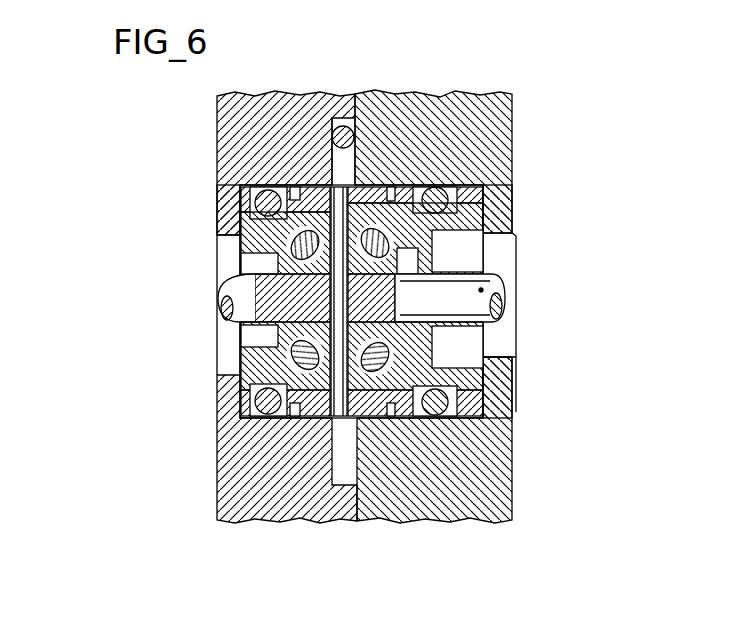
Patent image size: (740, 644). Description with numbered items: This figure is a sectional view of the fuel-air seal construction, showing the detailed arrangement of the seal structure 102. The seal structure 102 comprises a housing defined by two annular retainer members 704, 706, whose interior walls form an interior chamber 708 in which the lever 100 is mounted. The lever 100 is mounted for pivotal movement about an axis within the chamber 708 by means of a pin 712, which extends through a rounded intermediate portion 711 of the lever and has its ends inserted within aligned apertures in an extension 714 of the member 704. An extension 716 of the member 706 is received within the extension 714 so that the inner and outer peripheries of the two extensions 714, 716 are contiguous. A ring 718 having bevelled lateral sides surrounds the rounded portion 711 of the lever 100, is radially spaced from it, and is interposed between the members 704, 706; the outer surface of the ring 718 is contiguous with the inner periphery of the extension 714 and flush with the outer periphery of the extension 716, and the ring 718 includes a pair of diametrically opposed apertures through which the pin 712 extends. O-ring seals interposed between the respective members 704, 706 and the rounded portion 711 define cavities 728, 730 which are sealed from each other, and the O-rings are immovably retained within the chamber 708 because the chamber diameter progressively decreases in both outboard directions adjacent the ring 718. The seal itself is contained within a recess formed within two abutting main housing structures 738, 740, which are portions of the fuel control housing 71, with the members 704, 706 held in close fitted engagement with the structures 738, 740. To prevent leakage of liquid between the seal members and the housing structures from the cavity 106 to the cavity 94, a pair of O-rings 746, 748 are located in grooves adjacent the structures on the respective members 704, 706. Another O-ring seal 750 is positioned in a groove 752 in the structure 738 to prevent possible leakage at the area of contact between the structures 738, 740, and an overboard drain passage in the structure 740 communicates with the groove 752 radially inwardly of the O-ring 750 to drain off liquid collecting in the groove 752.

The fuel control housing 71 is at (468, 67).
The cavity 94 is at (220, 228).
The lever 100 is at (483, 291).
The seal structure 102 is at (140, 342).
The cavity 106 is at (500, 339).
The annular retainer member 704 is at (222, 238).
The annular retainer member 706 is at (488, 206).
The interior chamber 708 is at (255, 351).
The rounded intermediate portion 711 is at (216, 312).
The pin 712 is at (240, 287).
The extension 714 is at (377, 410).
The extension 716 is at (378, 382).
The ring 718 is at (358, 200).
The cavity 728 is at (242, 336).
The cavity 730 is at (488, 244).
The main housing structure 738 is at (286, 107).
The main housing structure 740 is at (495, 122).
The O-ring 746 is at (215, 413).
The O-ring 748 is at (486, 408).
The O-ring seal 750 is at (343, 120).
The groove 752 is at (333, 165).